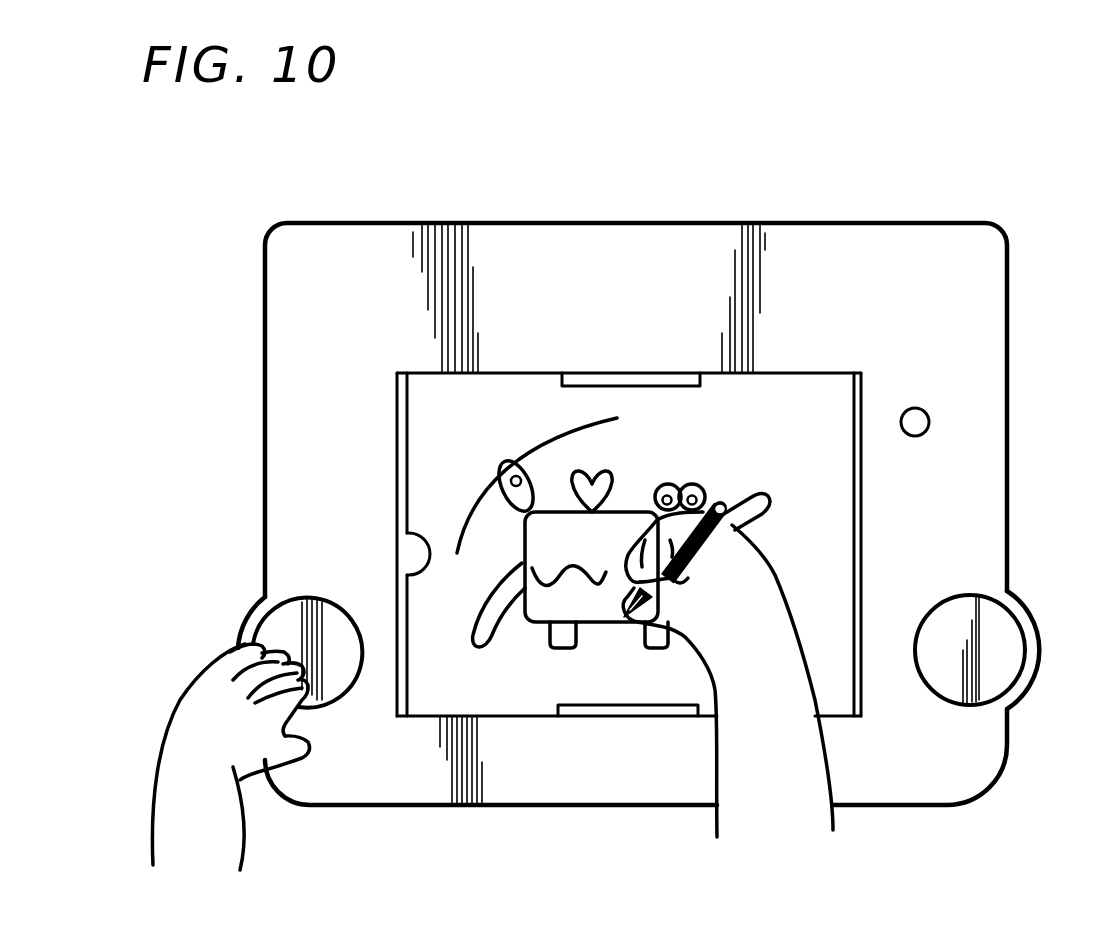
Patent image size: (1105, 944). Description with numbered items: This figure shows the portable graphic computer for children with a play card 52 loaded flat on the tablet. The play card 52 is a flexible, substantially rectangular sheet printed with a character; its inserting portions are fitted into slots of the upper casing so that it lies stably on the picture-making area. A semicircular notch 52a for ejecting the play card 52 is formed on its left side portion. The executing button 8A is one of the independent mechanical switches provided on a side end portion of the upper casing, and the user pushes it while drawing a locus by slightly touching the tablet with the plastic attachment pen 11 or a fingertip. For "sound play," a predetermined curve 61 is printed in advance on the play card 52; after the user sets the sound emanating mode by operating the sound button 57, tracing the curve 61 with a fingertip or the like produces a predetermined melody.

The play card 52 is at (443, 432).
The semicircular notch 52a is at (418, 544).
The sound button 57 is at (931, 420).
The predetermined curve 61 is at (552, 440).
The attachment pen 11 is at (752, 550).
The executing button 8A is at (328, 692).